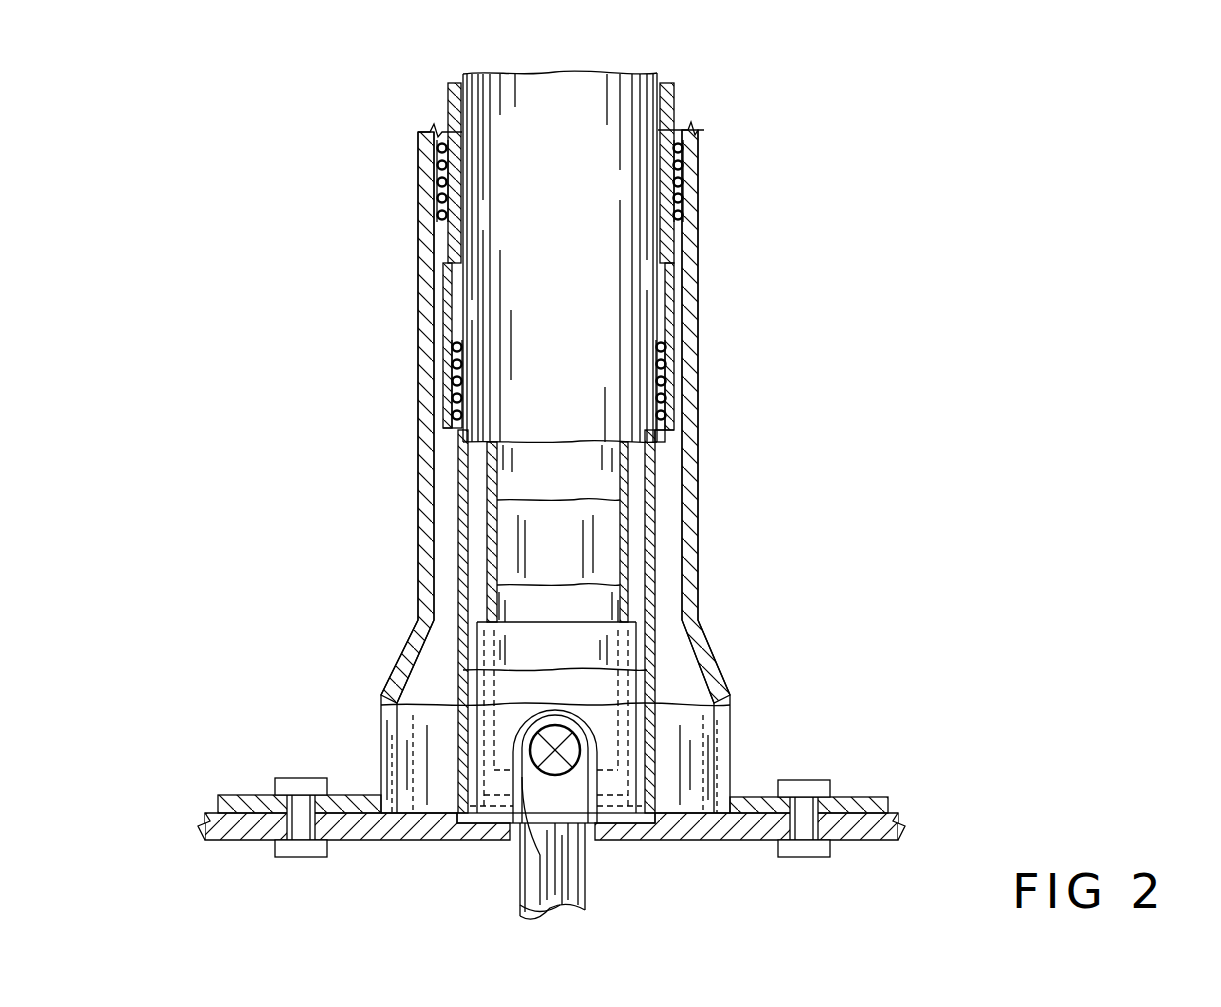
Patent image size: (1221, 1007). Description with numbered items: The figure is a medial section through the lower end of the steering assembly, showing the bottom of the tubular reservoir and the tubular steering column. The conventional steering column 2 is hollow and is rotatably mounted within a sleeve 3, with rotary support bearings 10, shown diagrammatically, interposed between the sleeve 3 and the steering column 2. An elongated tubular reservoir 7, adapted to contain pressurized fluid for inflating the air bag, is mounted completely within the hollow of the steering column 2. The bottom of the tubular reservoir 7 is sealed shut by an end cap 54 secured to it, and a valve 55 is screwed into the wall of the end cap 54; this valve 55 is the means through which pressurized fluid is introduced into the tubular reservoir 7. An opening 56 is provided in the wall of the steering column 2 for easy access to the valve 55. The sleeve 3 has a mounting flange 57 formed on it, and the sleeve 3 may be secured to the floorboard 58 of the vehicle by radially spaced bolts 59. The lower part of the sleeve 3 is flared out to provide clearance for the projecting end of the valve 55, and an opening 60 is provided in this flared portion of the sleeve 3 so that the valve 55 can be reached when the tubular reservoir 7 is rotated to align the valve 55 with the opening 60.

The steering column 2 is at (677, 102).
The sleeve 3 is at (698, 272).
The elongated tubular reservoir 7 is at (628, 548).
The rotary support bearings 10 is at (658, 436).
The end cap 54 is at (556, 622).
The valve 55 is at (555, 750).
The opening 56 is at (522, 867).
The mounting flange 57 is at (860, 800).
The floorboard 58 is at (860, 838).
The bolts 59 is at (303, 783).
The opening 60 is at (517, 739).